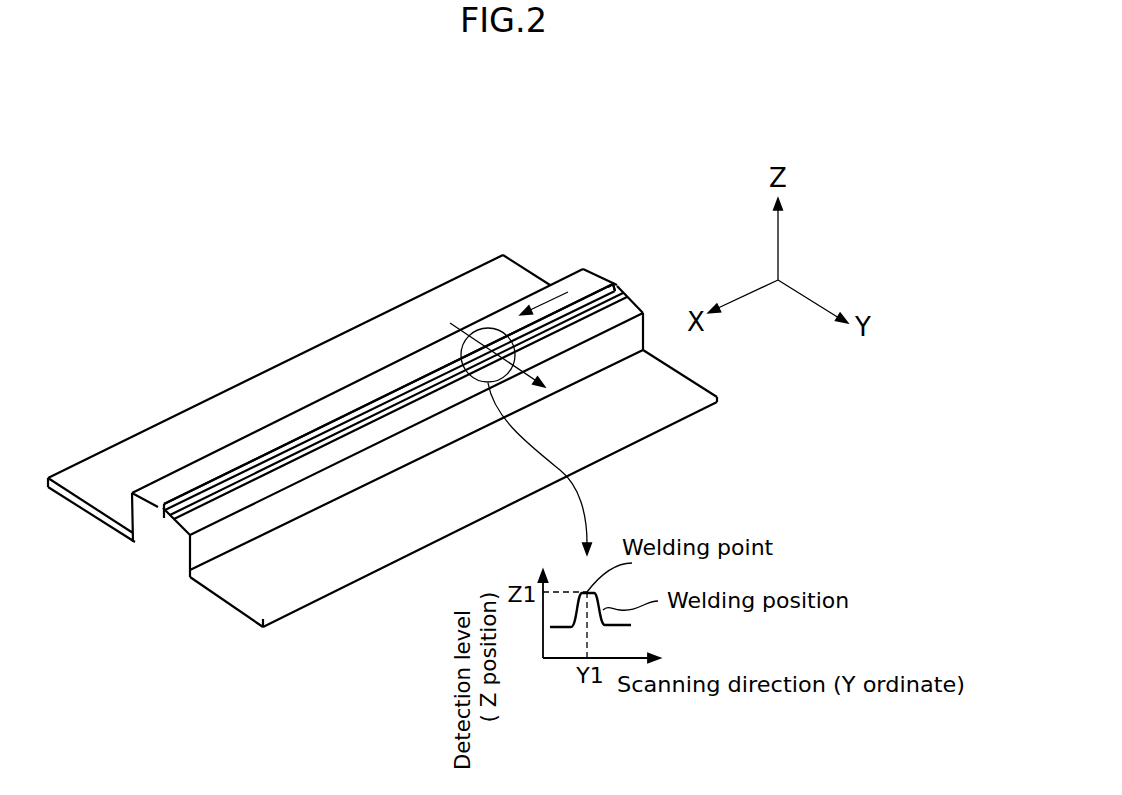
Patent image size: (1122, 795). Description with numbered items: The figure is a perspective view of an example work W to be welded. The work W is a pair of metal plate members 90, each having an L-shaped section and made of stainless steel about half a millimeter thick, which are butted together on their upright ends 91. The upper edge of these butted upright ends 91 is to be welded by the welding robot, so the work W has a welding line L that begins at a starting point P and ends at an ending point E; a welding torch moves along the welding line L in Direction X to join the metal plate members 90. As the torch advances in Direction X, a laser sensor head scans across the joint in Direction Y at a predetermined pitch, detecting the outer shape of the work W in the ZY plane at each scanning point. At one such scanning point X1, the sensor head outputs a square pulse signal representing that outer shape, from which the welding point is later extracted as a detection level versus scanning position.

The metal plate member 90 is at (193, 407).
The butted upright ends 91 is at (287, 440).
The work W is at (382, 413).
The ending point E is at (167, 507).
The welding line L is at (395, 392).
The starting point P is at (613, 287).
The scanning point X1 is at (488, 340).